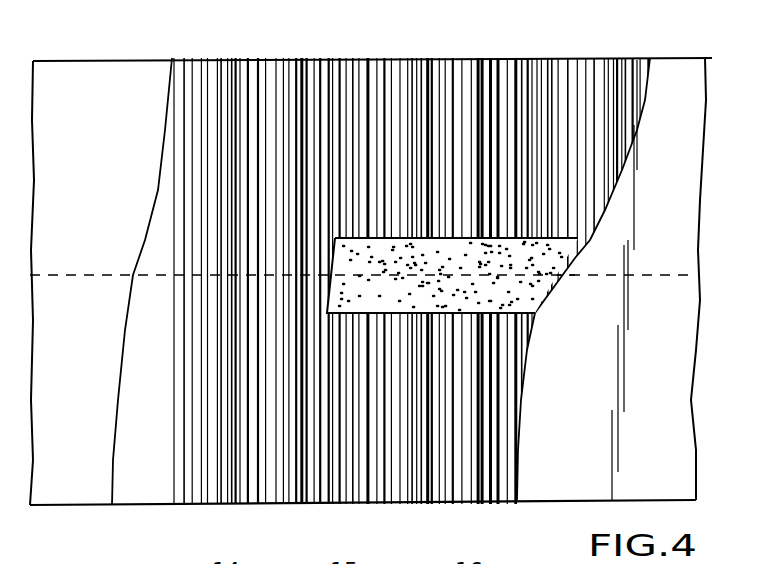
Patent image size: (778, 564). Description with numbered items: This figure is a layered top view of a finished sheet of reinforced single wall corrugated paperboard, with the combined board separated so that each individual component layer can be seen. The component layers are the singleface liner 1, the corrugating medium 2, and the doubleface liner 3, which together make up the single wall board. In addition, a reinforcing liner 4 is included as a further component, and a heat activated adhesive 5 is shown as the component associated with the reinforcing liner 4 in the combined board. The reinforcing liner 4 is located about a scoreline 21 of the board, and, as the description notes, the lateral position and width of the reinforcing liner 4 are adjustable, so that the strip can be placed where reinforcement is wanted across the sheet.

The singleface liner 1 is at (107, 85).
The corrugating medium 2 is at (287, 80).
The doubleface liner 3 is at (681, 113).
The reinforcing liner 4 is at (520, 237).
The heat activated adhesive 5 is at (517, 295).
The scoreline 21 is at (665, 270).